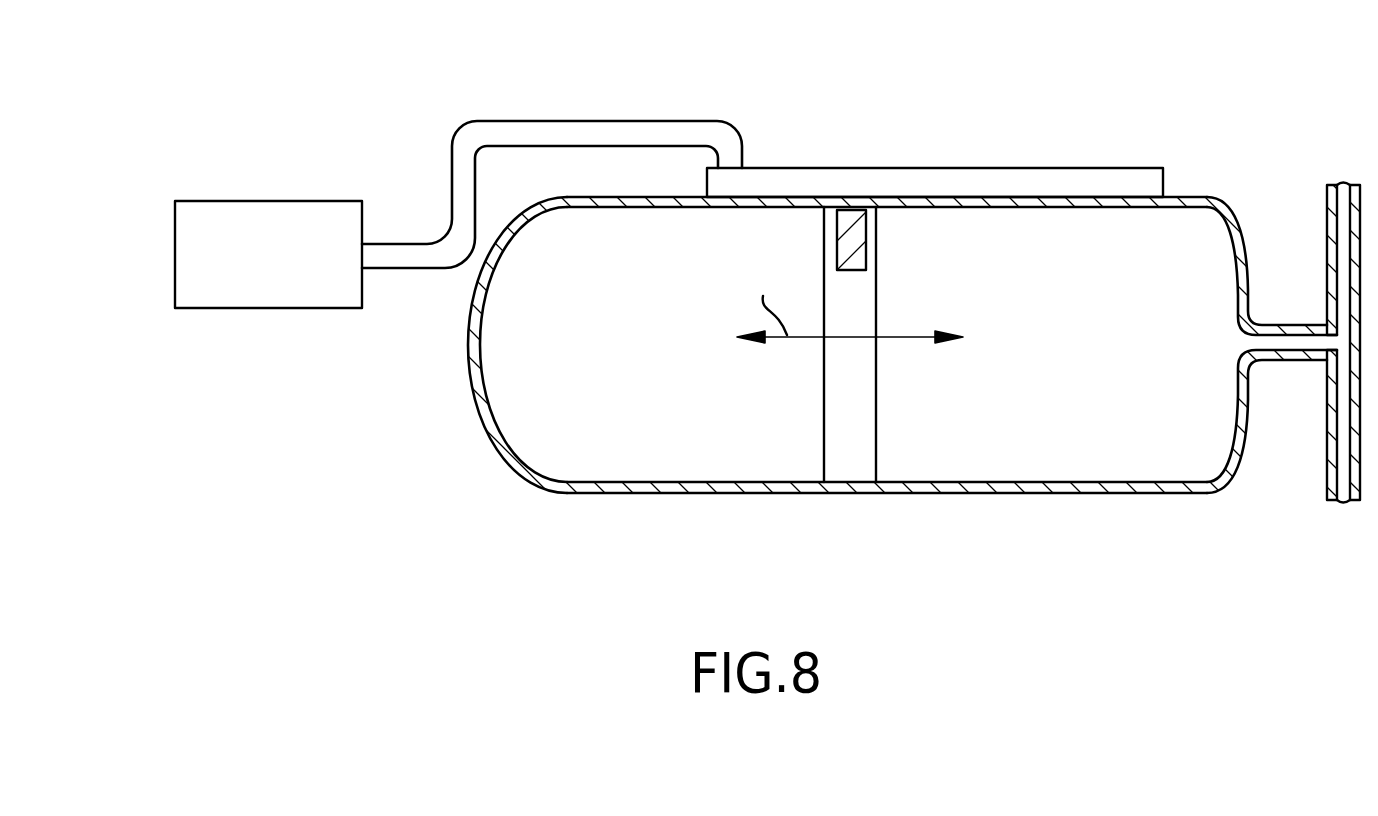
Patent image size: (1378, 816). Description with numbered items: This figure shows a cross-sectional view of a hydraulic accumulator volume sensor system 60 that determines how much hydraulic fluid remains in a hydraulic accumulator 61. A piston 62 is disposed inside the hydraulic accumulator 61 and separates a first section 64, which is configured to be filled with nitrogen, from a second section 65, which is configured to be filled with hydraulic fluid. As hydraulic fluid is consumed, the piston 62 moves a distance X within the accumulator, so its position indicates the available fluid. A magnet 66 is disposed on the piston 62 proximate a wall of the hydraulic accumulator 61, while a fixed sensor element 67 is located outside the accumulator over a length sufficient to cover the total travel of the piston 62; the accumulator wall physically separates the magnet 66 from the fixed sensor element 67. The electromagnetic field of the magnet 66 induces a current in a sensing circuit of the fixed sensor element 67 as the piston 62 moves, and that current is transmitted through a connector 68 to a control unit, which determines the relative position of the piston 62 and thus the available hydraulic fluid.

The hydraulic accumulator volume sensor system 60 is at (739, 317).
The hydraulic accumulator 61 is at (1088, 520).
The piston 62 is at (832, 392).
The first section 64 is at (582, 438).
The second section 65 is at (1195, 383).
The magnet 66 is at (858, 241).
The fixed sensor element 67 is at (1153, 183).
The connector 68 is at (184, 252).